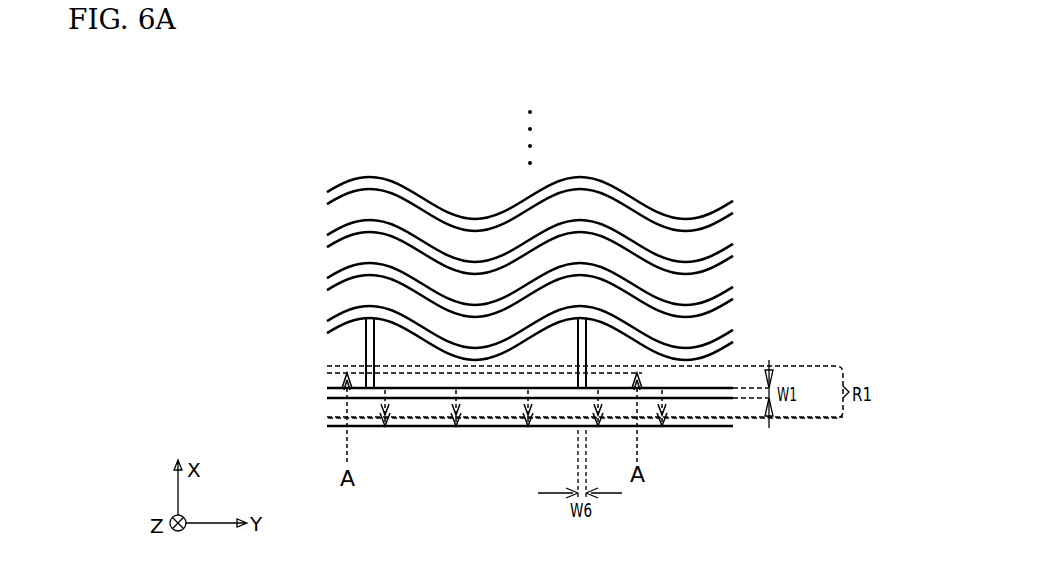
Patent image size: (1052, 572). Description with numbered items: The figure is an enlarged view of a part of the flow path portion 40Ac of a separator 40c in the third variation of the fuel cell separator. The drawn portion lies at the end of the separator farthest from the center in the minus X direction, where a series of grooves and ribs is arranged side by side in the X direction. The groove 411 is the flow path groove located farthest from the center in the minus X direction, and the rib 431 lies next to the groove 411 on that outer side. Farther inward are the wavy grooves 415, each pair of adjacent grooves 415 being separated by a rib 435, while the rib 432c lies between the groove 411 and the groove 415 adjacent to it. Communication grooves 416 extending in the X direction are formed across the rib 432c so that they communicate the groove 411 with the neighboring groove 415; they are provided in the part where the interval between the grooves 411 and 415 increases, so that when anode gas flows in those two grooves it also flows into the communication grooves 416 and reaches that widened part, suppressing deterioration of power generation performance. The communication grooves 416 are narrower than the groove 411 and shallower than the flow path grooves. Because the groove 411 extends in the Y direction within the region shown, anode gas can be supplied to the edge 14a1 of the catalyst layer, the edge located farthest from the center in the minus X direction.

The separator 40c is at (753, 140).
The flow path portion 40Ac is at (778, 178).
The groove 415 is at (733, 203).
The rib 435 is at (337, 214).
The communication groove 416 is at (366, 330).
The rib 432c is at (337, 353).
The rib 431 is at (337, 409).
The edge of the catalyst layer 14a1 is at (417, 428).
The groove 411 is at (722, 393).